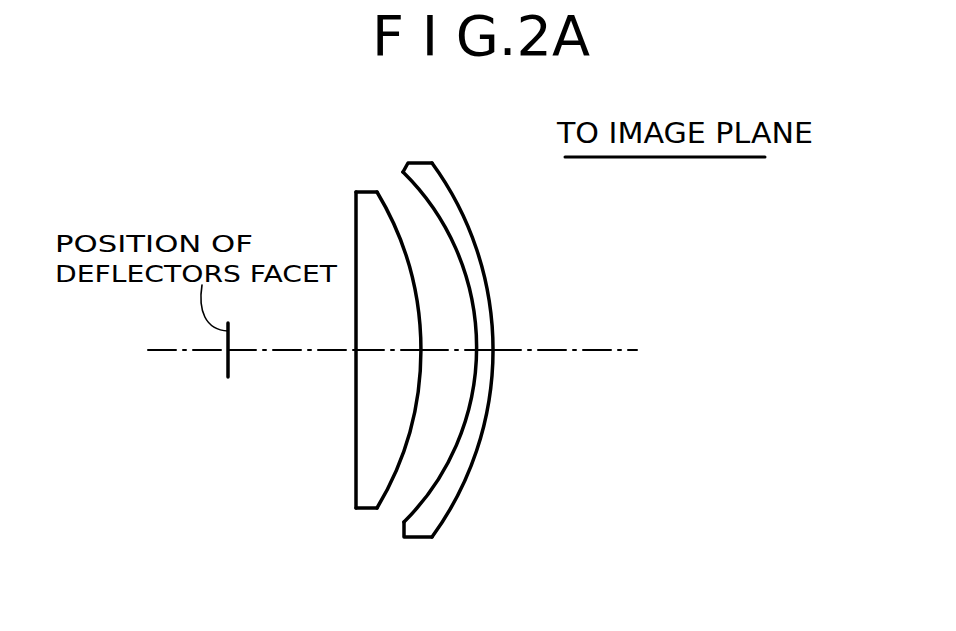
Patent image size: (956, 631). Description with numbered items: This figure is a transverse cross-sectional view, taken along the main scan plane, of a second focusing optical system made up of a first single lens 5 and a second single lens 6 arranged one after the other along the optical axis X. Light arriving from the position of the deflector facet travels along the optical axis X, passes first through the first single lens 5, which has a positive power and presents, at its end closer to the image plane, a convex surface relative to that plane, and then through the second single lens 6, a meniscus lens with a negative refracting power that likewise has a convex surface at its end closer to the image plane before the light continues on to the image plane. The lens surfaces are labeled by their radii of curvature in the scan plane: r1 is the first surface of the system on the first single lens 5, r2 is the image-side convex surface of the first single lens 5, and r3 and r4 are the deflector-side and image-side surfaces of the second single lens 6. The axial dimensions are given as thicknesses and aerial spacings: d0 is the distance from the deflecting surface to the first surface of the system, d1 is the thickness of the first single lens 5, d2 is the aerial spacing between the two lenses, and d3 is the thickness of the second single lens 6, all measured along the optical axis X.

The first single lens 5 is at (360, 352).
The second single lens 6 is at (459, 350).
The radius of curvature r1 is at (355, 232).
The radius of curvature r2 is at (391, 212).
The radius of curvature r3 is at (418, 192).
The radius of curvature r4 is at (467, 215).
The distance between deflecting surface and first surface d0 is at (287, 352).
The lens thickness d1 is at (391, 352).
The aerial spacing d2 is at (445, 352).
The lens thickness d3 is at (493, 352).
The optical axis X is at (577, 350).